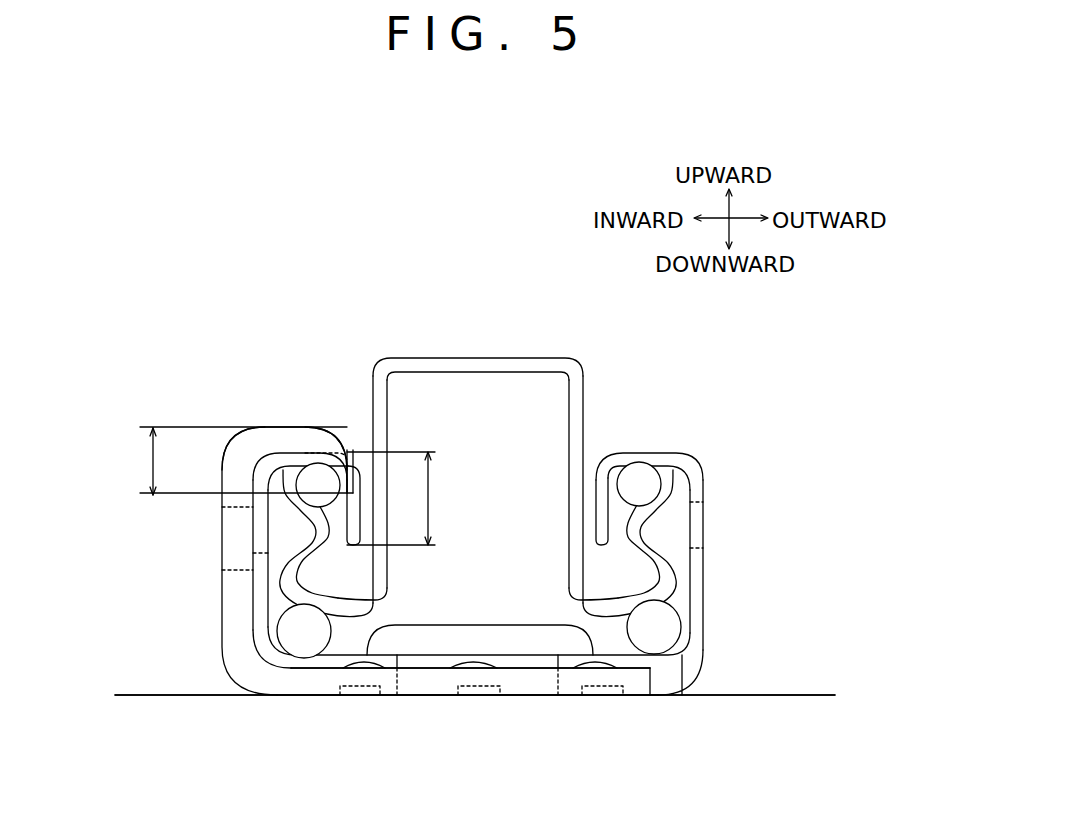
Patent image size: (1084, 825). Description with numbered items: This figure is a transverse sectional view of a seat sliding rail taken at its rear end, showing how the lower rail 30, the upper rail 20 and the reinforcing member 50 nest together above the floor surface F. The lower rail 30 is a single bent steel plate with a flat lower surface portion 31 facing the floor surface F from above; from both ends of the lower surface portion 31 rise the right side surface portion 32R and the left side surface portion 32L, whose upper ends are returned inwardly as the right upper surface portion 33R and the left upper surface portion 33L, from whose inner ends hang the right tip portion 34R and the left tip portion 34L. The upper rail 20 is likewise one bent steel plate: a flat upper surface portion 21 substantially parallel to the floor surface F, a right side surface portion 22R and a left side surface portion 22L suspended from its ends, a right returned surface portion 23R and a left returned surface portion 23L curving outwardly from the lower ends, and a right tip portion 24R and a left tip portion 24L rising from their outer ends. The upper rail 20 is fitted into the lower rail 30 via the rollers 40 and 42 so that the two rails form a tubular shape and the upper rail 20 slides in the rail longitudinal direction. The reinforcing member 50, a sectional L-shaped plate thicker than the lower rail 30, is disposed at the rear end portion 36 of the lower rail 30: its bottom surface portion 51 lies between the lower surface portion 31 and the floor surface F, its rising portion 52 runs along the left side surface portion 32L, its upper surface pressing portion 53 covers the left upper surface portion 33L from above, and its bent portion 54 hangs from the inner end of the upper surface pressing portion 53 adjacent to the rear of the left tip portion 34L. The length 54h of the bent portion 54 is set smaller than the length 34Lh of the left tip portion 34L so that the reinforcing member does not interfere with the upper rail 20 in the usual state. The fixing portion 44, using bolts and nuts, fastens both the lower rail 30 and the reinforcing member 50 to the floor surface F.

The upper rail 20 is at (478, 460).
The upper surface portion 21 is at (537, 368).
The left side surface portion 22L is at (385, 417).
The right side surface portion 22R is at (570, 480).
The left returned surface portion 23L is at (340, 600).
The right returned surface portion 23R is at (640, 592).
The left tip portion 24L is at (315, 530).
The right tip portion 24R is at (637, 530).
The lower rail 30 is at (470, 573).
The lower surface portion 31 is at (433, 660).
The left side surface portion 32L is at (262, 590).
The right side surface portion 32R is at (700, 573).
The left upper surface portion 33L is at (292, 458).
The right upper surface portion 33R is at (655, 452).
The left tip portion 34L is at (357, 525).
The right tip portion 34R is at (603, 513).
The length of the left tip portion 34Lh is at (403, 498).
The rear end portion 36 is at (680, 653).
The roller 40 is at (308, 485).
The roller 42 is at (303, 630).
The fixing portion 44 is at (473, 640).
The reinforcing member 50 is at (241, 518).
The bottom surface portion 51 is at (520, 678).
The rising portion 52 is at (237, 483).
The upper surface pressing portion 53 is at (333, 428).
The bent portion 54 is at (328, 482).
The length of the bent portion 54h is at (226, 461).
The floor surface F is at (802, 690).